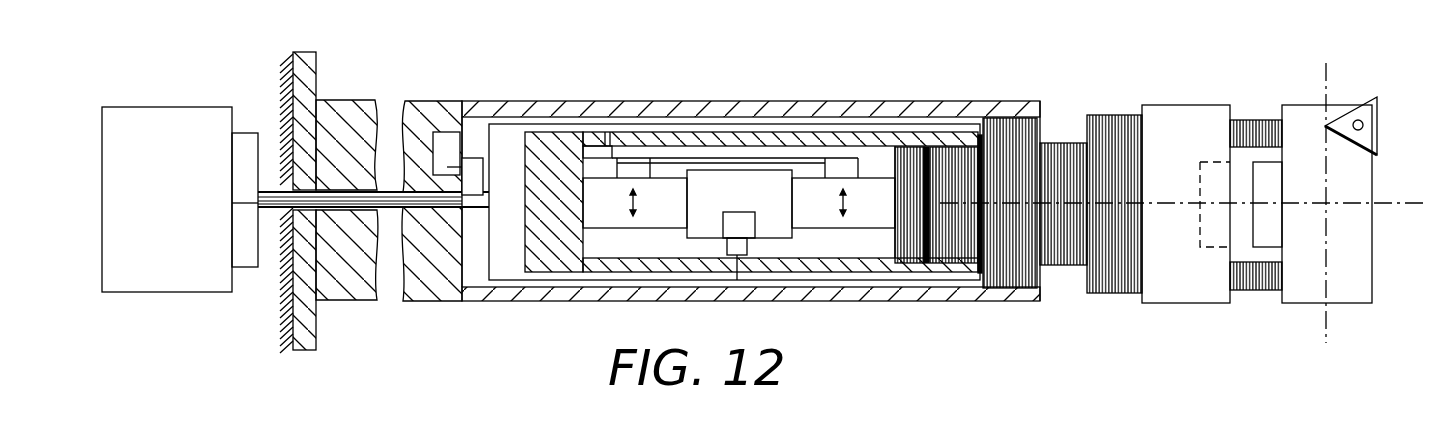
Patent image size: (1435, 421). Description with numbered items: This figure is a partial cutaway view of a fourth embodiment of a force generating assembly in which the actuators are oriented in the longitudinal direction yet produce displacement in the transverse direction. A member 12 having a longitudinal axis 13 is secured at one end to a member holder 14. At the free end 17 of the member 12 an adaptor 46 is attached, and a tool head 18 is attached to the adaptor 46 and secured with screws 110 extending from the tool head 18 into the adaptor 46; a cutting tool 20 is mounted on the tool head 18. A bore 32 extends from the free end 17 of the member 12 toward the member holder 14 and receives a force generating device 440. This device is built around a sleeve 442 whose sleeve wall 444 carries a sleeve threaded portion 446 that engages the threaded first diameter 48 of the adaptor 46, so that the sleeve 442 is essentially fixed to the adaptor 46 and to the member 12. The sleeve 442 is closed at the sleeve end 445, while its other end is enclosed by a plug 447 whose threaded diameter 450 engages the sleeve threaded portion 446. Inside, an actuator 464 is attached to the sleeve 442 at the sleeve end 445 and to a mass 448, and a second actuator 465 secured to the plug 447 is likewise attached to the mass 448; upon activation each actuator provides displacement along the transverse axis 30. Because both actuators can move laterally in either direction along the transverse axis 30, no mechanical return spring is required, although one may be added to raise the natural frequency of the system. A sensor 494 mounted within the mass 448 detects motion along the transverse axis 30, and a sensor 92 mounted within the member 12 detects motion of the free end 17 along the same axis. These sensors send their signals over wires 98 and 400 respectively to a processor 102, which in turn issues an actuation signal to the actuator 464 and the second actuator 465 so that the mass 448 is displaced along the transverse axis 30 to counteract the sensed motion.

The processor 102 is at (181, 106).
The member holder 14 is at (302, 54).
The member 12 is at (349, 101).
The sensor 92 is at (441, 131).
The wires 98 is at (471, 158).
The bore 32 is at (699, 103).
The wires 400 is at (513, 283).
The sleeve end 445 is at (562, 256).
The force generating device 440 is at (651, 116).
The plug 447 is at (897, 246).
The sleeve 442 is at (911, 150).
The sleeve wall 444 is at (956, 145).
The threaded diameter 450 is at (905, 273).
The sleeve threaded portion 446 is at (958, 270).
The free end 17 is at (1042, 104).
The threaded first diameter 48 is at (1058, 264).
The adaptor 46 is at (1173, 112).
The screws 110 is at (1258, 292).
The tool head 18 is at (1373, 222).
The cutting tool 20 is at (1378, 107).
The transverse axis 30 is at (1330, 312).
The longitudinal axis 13 is at (1403, 188).
The actuator 464 is at (660, 220).
The mass 448 is at (762, 186).
The second actuator 465 is at (815, 215).
The sensor 494 is at (734, 212).